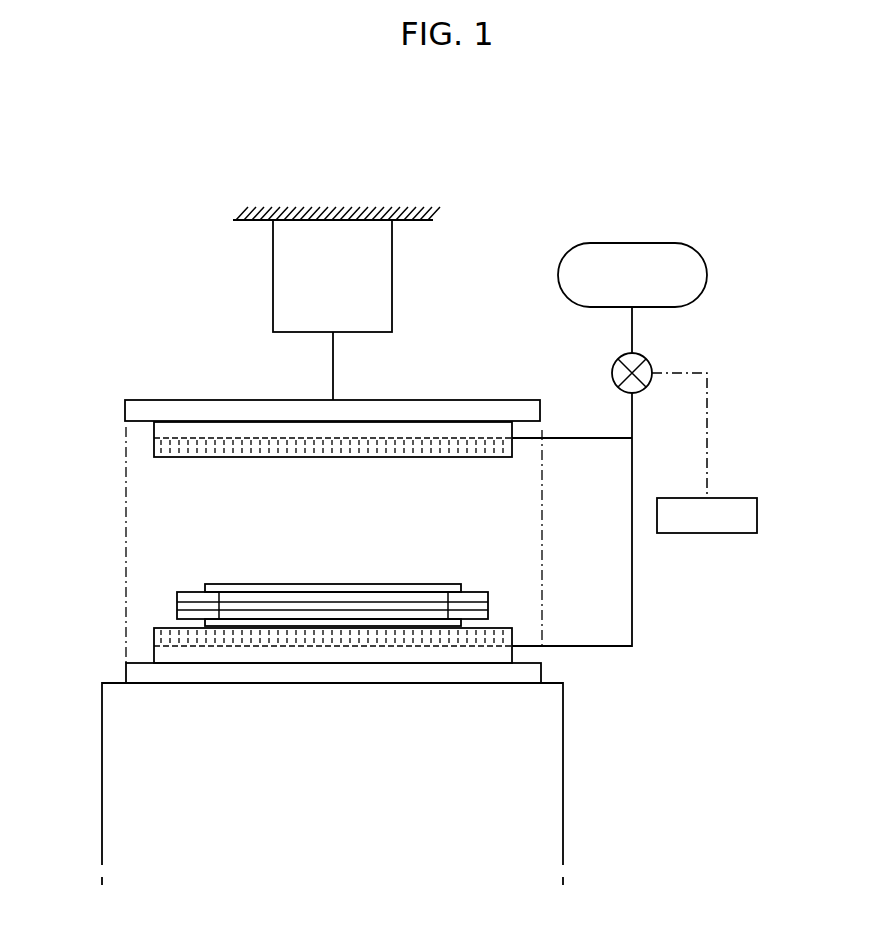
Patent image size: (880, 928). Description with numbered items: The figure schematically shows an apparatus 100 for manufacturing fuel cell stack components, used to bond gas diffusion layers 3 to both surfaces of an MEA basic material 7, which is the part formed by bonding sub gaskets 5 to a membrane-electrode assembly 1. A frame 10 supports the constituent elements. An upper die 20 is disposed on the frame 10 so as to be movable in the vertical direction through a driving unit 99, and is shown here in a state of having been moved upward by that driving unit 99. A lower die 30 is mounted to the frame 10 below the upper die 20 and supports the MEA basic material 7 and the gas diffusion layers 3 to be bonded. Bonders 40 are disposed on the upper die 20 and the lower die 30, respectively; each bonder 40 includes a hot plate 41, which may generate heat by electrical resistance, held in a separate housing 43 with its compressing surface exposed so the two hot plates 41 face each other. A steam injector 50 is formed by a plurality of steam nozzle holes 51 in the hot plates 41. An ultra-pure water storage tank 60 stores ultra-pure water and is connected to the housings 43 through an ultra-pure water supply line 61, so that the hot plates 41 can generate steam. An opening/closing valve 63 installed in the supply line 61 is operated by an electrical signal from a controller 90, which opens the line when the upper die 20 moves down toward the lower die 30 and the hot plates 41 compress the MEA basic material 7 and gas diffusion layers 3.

The apparatus for manufacturing fuel cell stack components 100 is at (383, 156).
The driving unit 99 is at (273, 278).
The upper die 20 is at (204, 400).
The bonder 40 is at (153, 441).
The steam injector 50 is at (255, 439).
The steam nozzle hole 51 is at (431, 442).
The hot plate 41 is at (483, 441).
The housing 43 is at (512, 429).
The ultra-pure water storage tank 60 is at (633, 243).
The ultra-pure water supply line 61 is at (633, 474).
The opening/closing valve 63 is at (612, 373).
The controller 90 is at (708, 533).
The gas diffusion layer 3 is at (229, 584).
The MEA basic material 7 is at (170, 592).
The membrane-electrode assembly 1 is at (177, 605).
The sub gasket 5 is at (488, 597).
The lower die 30 is at (541, 676).
The frame 10 is at (563, 766).